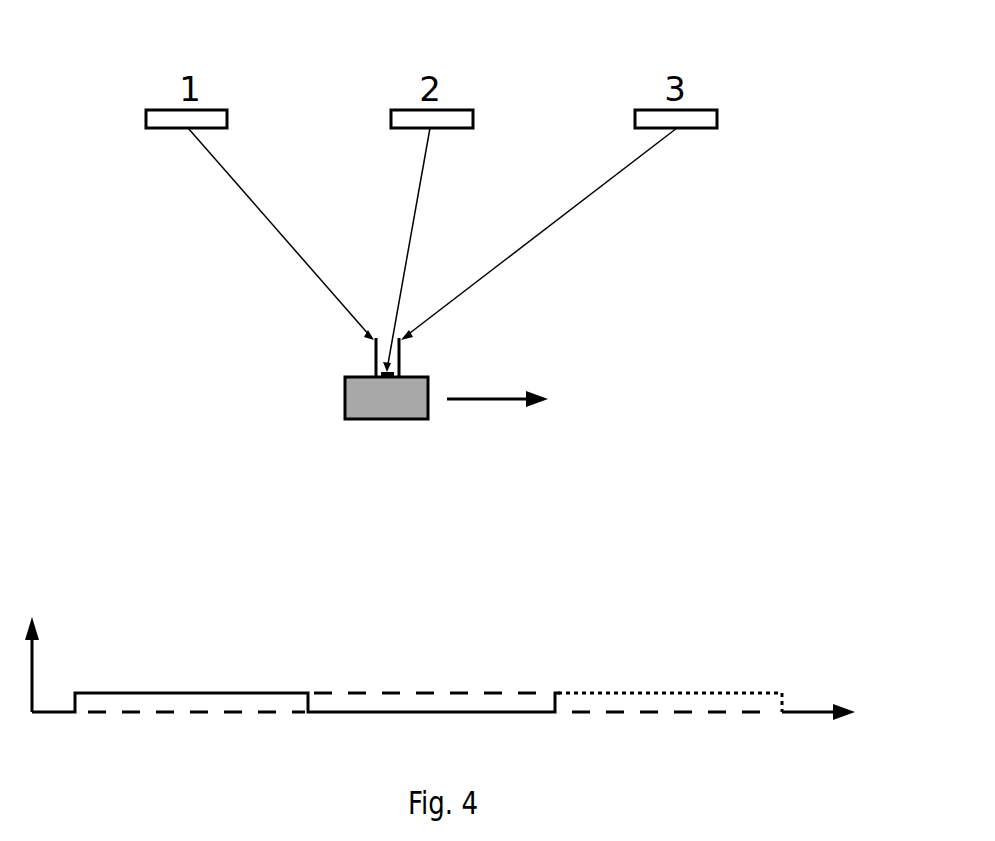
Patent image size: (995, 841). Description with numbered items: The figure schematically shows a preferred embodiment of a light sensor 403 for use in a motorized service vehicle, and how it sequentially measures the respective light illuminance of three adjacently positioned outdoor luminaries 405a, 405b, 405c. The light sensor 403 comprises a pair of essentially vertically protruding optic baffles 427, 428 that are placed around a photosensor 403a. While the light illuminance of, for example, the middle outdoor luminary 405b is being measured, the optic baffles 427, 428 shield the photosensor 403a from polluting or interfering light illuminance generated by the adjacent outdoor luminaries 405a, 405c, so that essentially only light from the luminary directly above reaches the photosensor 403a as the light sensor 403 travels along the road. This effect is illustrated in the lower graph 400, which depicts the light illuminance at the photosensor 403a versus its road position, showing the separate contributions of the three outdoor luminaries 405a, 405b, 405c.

The outdoor luminary 405a is at (144, 140).
The outdoor luminary 405b is at (389, 140).
The outdoor luminary 405c is at (626, 140).
The optic baffle 427 is at (317, 347).
The optic baffle 428 is at (448, 353).
The light sensor 403 is at (326, 387).
The photosensor 403a is at (332, 413).
The graph 400 is at (451, 701).